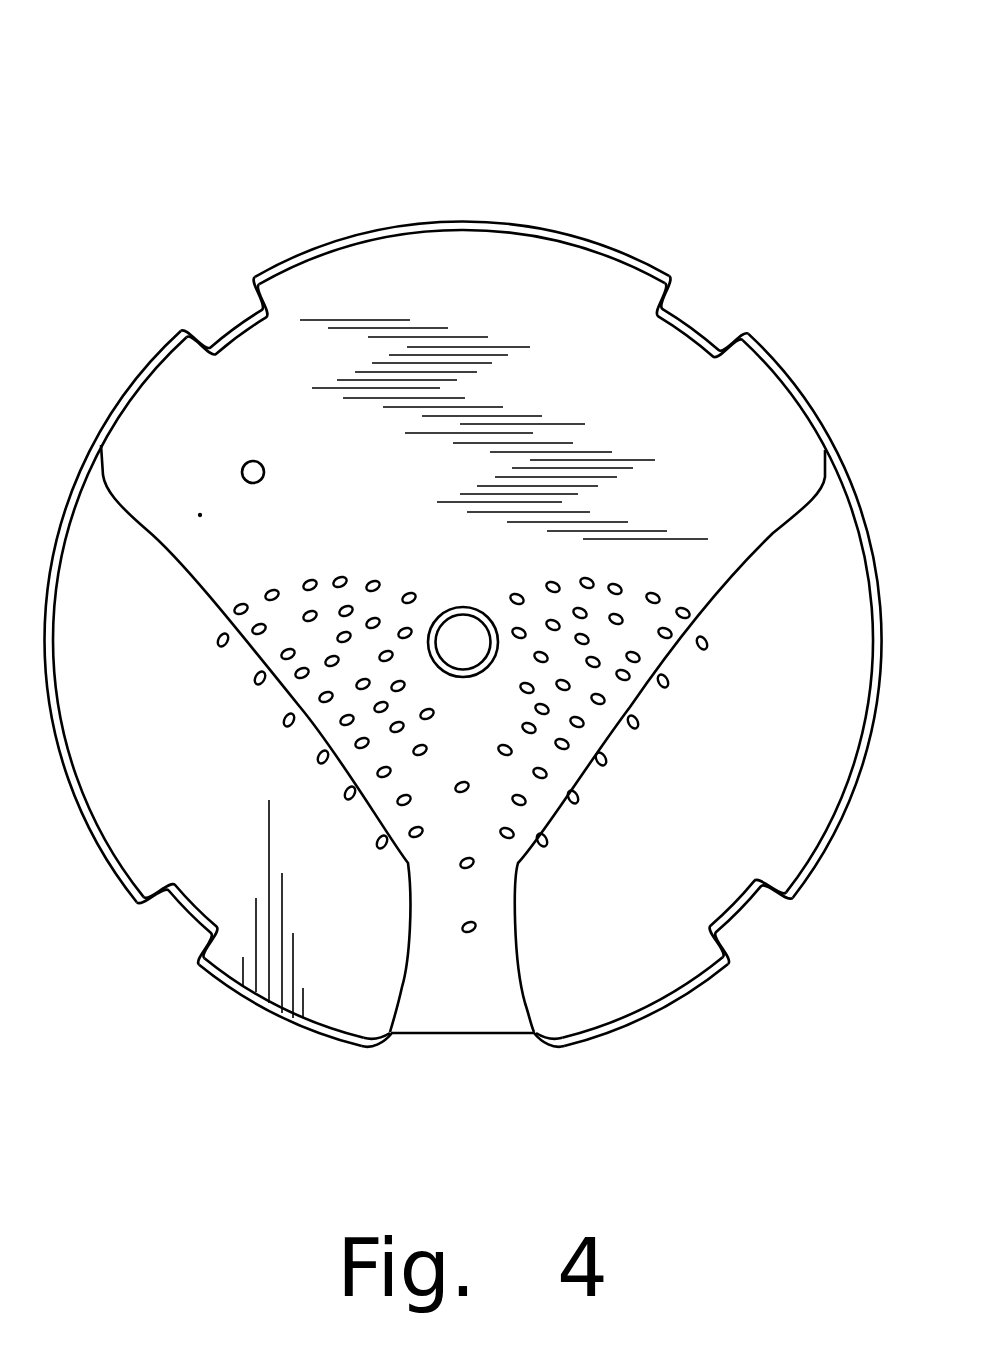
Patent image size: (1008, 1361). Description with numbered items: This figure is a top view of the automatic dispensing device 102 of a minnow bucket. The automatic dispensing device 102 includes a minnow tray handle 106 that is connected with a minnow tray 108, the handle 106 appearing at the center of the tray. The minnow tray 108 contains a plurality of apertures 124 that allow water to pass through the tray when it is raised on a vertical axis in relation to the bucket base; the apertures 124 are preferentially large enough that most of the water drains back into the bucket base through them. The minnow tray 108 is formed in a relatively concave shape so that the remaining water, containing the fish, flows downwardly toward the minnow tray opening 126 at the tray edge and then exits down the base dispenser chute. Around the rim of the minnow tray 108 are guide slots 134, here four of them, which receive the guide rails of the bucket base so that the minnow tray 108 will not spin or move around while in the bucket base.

The automatic dispensing device 102 is at (334, 124).
The minnow tray handle 106 is at (455, 607).
The minnow tray 108 is at (537, 226).
The apertures 124 is at (310, 578).
The minnow tray opening 126 is at (470, 1033).
The guide slot 134 is at (240, 318).